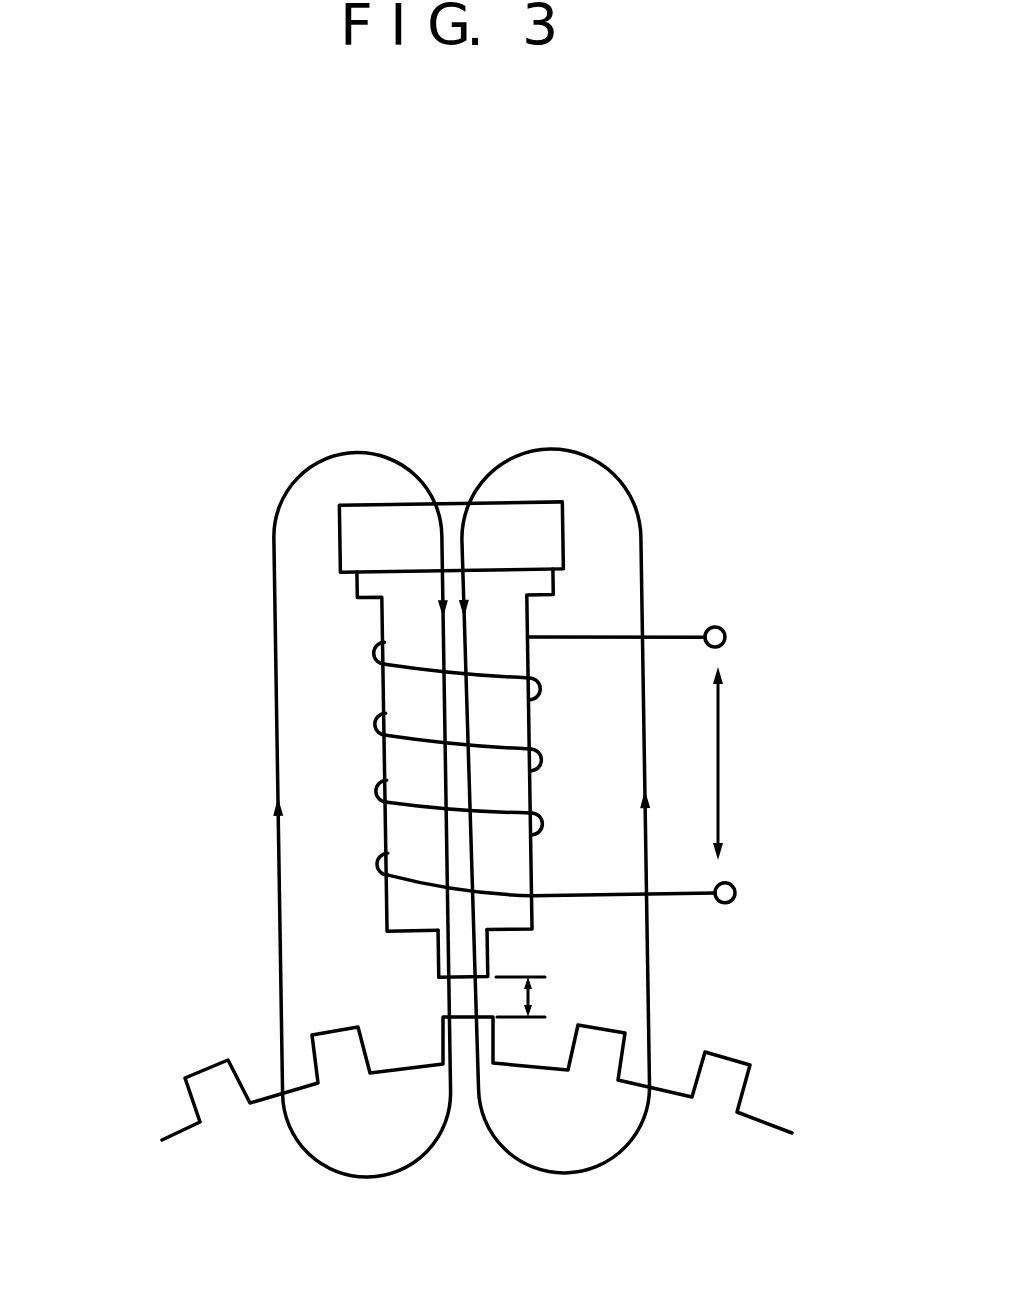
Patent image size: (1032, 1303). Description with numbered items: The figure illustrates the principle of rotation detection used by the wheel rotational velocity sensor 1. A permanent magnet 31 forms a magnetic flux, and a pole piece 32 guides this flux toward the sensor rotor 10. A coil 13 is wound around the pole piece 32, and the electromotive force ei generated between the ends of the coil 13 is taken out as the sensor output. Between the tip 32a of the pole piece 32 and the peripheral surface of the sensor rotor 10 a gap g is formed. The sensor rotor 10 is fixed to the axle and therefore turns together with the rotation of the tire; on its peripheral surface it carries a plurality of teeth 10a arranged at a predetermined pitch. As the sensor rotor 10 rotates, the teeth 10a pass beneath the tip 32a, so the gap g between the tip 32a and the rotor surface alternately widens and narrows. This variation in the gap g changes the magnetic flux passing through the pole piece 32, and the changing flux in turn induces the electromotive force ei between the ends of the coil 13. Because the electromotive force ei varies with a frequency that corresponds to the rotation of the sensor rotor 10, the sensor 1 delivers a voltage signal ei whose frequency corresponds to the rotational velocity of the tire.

The wheel rotational velocity sensor 1 is at (244, 337).
The permanent magnet 31 is at (547, 527).
The pole piece 32 is at (407, 832).
The tip of the pole piece 32a is at (437, 963).
The coil 13 is at (410, 742).
The sensor rotor 10 is at (470, 1045).
The teeth 10a is at (835, 1100).
The gap g is at (533, 998).
The electromotive force ei is at (740, 763).